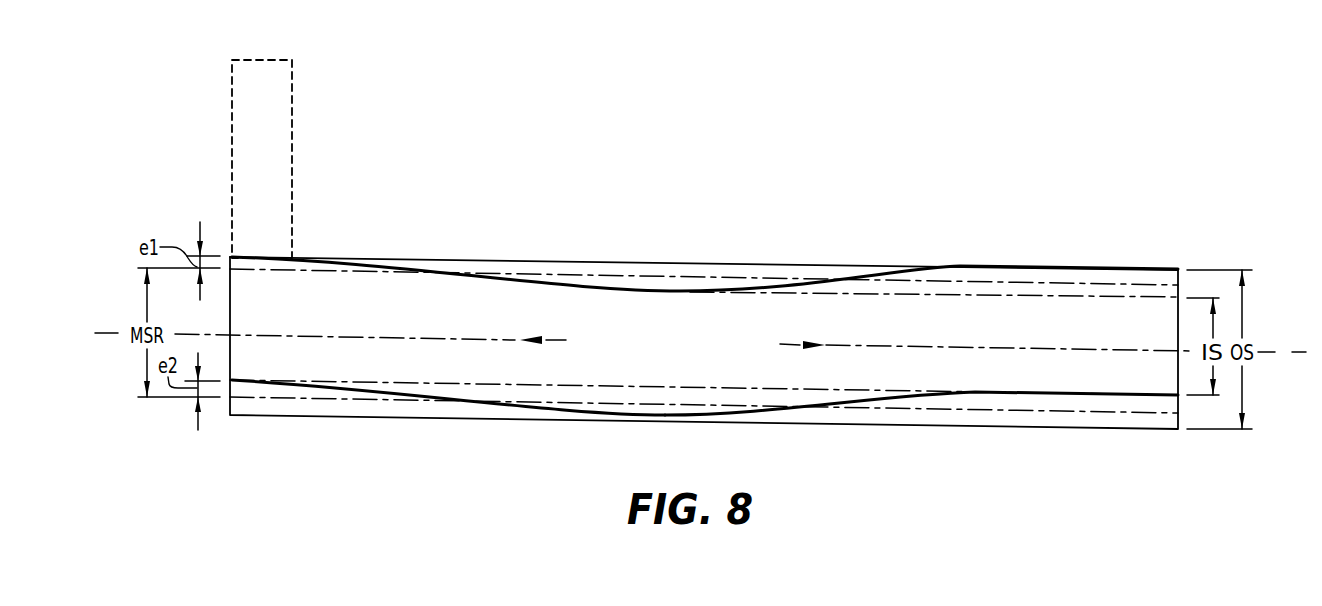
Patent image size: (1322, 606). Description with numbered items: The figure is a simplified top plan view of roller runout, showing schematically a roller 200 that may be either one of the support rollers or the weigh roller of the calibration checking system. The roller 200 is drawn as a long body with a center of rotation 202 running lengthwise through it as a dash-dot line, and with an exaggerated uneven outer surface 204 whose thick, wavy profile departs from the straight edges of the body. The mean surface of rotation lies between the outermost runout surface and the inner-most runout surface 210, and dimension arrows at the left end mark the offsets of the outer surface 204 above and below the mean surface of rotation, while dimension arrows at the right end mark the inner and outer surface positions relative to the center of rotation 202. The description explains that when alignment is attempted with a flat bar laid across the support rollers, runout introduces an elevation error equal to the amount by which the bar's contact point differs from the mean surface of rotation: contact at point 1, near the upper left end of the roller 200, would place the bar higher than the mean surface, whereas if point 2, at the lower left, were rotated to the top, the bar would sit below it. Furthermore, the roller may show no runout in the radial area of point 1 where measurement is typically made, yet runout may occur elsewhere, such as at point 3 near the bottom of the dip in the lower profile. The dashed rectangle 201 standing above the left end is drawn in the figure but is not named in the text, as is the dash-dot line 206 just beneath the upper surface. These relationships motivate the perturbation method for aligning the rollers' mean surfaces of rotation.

The roller 200 is at (997, 234).
The removed material region 201 is at (263, 58).
The center of rotation 202 is at (1281, 352).
The outer surface 204 is at (1117, 269).
The upper reference line 206 is at (284, 272).
The inner-most runout surface 210 is at (313, 380).
The point 1 is at (240, 250).
The point 2 is at (240, 392).
The point 3 is at (660, 432).